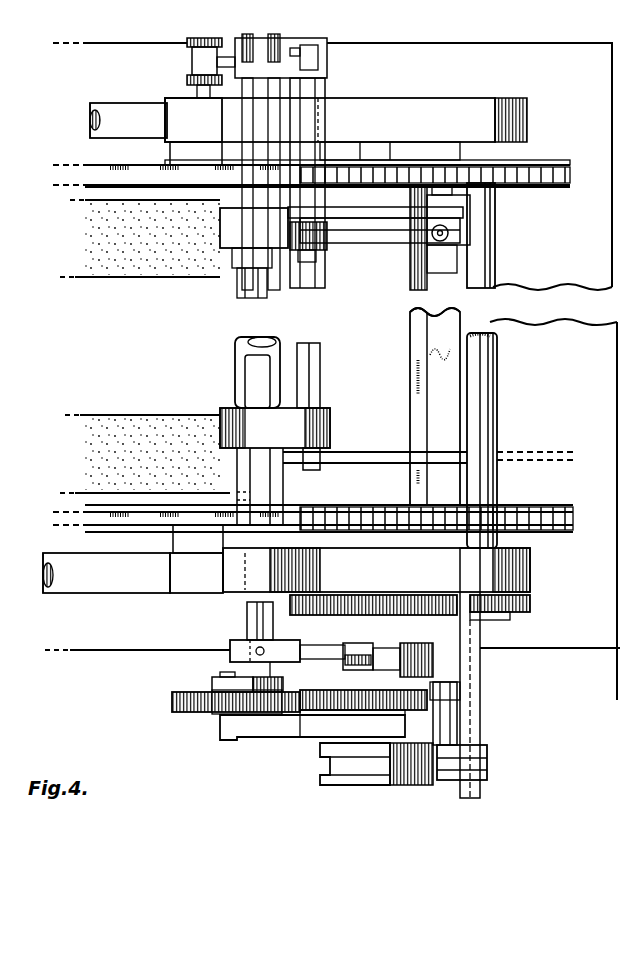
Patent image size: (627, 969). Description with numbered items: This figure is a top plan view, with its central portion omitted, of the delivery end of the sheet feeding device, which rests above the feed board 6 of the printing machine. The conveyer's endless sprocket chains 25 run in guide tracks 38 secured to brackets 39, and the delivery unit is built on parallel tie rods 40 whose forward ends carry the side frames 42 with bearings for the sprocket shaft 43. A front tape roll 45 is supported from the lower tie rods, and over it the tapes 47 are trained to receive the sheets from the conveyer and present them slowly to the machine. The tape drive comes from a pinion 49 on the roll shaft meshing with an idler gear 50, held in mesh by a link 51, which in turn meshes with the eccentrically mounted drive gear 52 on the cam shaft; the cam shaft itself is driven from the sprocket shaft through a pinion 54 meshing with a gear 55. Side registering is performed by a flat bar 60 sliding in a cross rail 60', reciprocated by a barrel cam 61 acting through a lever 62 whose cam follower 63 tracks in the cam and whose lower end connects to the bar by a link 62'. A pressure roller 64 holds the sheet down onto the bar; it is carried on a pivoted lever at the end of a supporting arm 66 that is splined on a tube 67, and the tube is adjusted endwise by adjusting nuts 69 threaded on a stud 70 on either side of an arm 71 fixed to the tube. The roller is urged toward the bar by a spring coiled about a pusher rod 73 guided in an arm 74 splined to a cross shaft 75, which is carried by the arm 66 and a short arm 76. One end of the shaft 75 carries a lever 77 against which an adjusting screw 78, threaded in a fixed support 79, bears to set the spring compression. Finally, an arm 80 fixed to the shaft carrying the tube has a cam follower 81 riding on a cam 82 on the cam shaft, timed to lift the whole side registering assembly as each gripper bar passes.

The feed board 6 is at (590, 480).
The endless sprocket chains 25 is at (130, 160).
The guide tracks 38 is at (105, 162).
The brackets 39 is at (190, 150).
The tie rods 40 is at (98, 120).
The frames 42 is at (400, 118).
The shaft 43 is at (485, 415).
The tape roll 45 is at (237, 351).
The tapes 47 is at (150, 268).
The pinion 49 is at (280, 692).
The idler gear 50 is at (172, 700).
The link 51 is at (215, 680).
The drive gear 52 is at (335, 710).
The pinion 54 is at (508, 620).
The gear 55 is at (350, 587).
The flat bar 60 is at (415, 406).
The cross rail 60' is at (409, 323).
The barrel cam 61 is at (370, 767).
The lever 62 is at (462, 782).
The link 62' is at (479, 713).
The cam follower 63 is at (413, 783).
The pressure roller 64 is at (470, 255).
The supporting arm 66 is at (373, 212).
The tube 67 is at (252, 200).
The adjusting nuts 69 is at (187, 48).
The stud 70 is at (197, 86).
The arm 71 is at (213, 61).
The pusher rod 73 is at (448, 232).
The arm 74 is at (395, 243).
The cross shaft 75 is at (306, 262).
The short arm 76 is at (283, 432).
The lever 77 is at (327, 55).
The adjusting screw 78 is at (248, 78).
The support 79 is at (274, 78).
The arm 80 is at (268, 640).
The cam follower 81 is at (343, 655).
The cam 82 is at (393, 670).